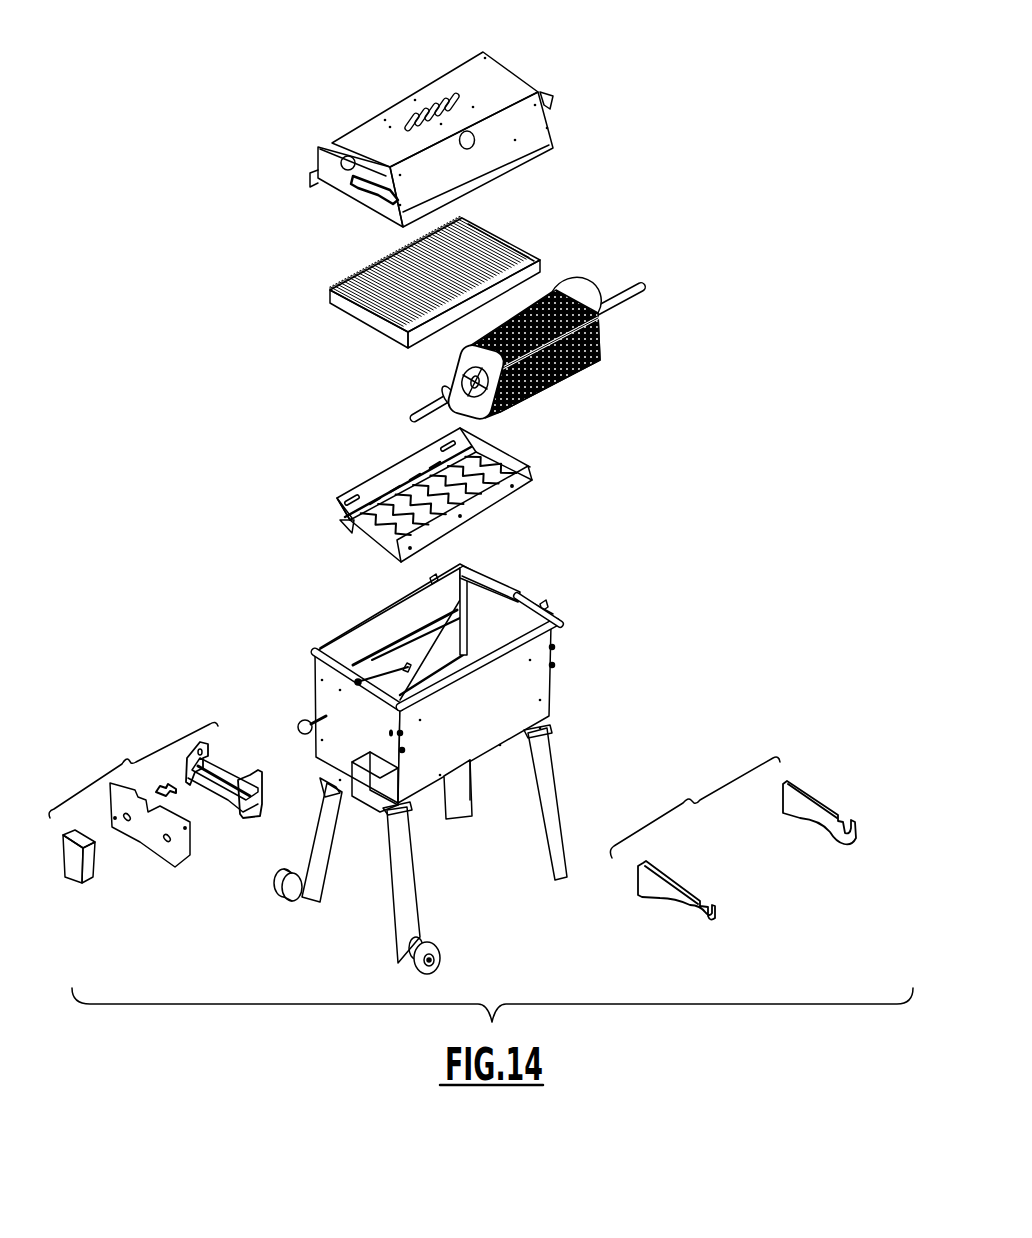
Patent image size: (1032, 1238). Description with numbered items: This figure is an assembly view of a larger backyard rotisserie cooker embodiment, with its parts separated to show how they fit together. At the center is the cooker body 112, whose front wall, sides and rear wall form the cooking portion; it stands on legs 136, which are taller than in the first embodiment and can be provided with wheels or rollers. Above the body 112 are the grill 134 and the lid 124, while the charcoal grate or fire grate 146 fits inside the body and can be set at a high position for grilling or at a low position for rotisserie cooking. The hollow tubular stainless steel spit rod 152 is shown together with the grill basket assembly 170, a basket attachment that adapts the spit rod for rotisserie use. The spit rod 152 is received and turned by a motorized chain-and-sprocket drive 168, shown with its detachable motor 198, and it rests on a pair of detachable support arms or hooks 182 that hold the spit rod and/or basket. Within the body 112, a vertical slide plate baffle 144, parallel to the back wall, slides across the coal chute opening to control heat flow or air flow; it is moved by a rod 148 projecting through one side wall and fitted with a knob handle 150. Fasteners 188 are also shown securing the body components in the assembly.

The cooker body 112 is at (620, 705).
The lid 124 is at (516, 70).
The grill 134 is at (370, 318).
The legs 136 is at (547, 837).
The slide plate baffle 144 is at (463, 633).
The fire grate 146 is at (332, 507).
The rod 148 is at (380, 685).
The knob handle 150 is at (300, 719).
The spit rod 152 is at (628, 299).
The sprocket drive 168 is at (155, 794).
The grill basket assembly 170 is at (553, 293).
The spit rod support arms 182 is at (733, 838).
The fasteners 188 is at (555, 647).
The detachable motor 198 is at (88, 872).